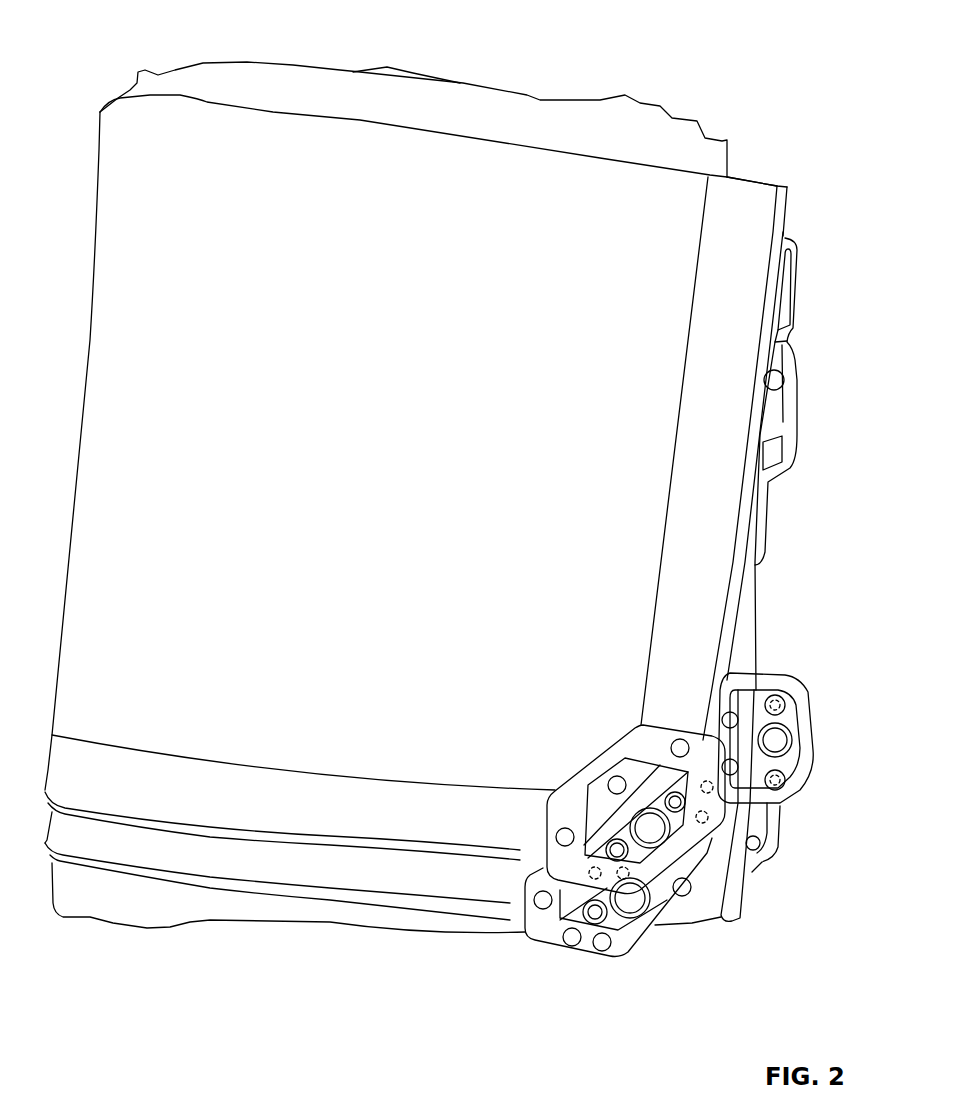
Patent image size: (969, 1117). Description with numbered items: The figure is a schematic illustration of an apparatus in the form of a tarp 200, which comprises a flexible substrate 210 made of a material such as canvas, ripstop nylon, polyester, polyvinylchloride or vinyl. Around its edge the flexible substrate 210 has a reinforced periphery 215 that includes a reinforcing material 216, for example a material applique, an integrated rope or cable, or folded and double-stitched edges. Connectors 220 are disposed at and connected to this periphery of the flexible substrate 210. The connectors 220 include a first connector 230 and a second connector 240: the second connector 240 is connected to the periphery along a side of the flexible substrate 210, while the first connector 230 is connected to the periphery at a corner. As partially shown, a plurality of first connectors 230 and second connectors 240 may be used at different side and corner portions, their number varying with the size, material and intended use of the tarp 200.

The tarp 200 is at (702, 45).
The flexible substrate 210 is at (505, 297).
The reinforced periphery 215 is at (680, 618).
The reinforcing material 216 is at (787, 188).
The connectors 220 is at (663, 725).
The first connector 230 is at (690, 833).
The second connector 240 is at (788, 362).